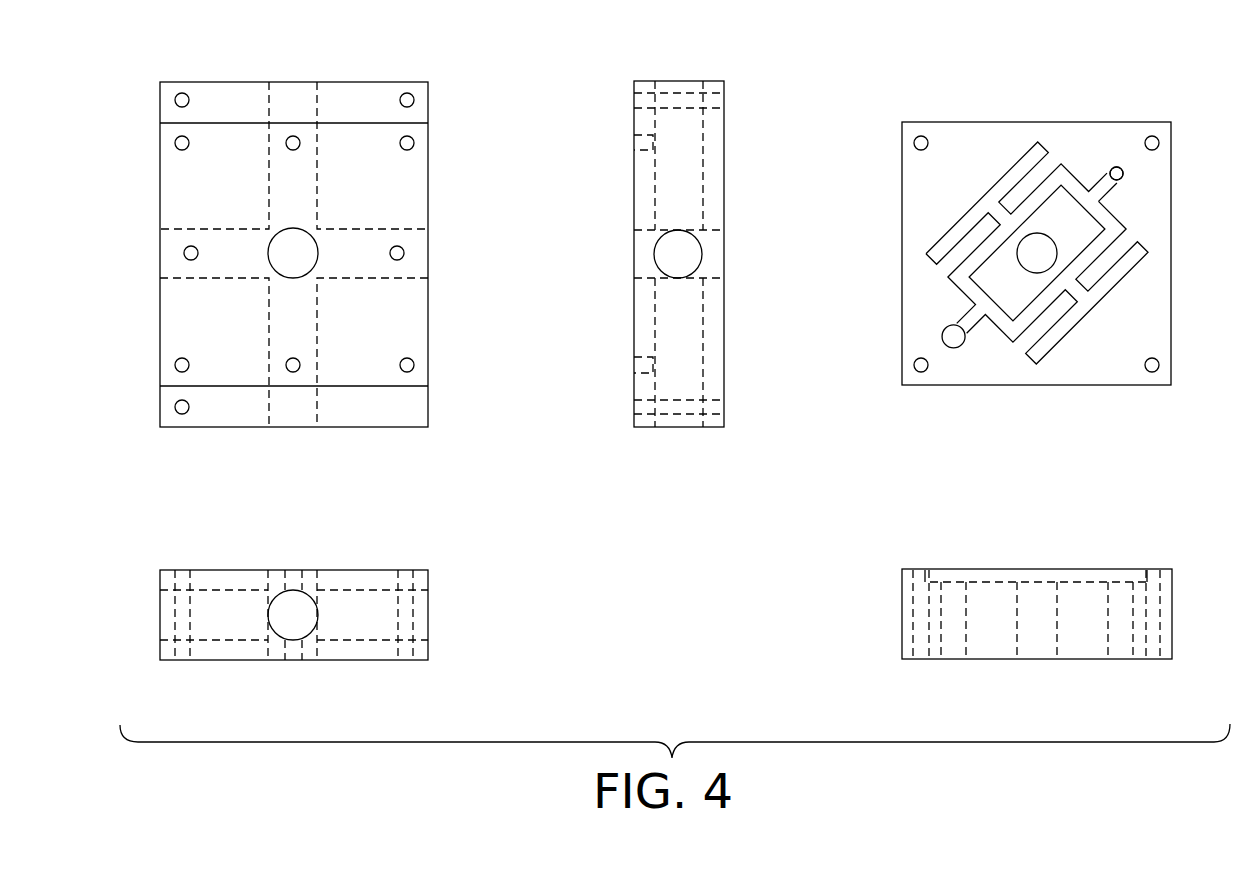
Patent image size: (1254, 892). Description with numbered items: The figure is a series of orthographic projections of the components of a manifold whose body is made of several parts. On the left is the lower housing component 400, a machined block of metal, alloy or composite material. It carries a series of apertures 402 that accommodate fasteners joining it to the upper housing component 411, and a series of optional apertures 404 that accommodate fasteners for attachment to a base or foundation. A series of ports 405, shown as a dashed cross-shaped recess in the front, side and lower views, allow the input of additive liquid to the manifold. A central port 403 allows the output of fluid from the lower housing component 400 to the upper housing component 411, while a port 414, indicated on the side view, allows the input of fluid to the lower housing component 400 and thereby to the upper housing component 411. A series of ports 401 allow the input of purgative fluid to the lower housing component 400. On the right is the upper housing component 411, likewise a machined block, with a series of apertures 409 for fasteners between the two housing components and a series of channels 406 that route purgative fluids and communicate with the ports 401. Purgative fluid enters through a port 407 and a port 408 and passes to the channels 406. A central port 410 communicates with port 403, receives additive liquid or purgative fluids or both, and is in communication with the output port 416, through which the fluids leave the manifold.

The lower housing component 400 is at (445, 83).
The ports 401 is at (399, 247).
The apertures 402 is at (411, 359).
The port 403 is at (301, 229).
The optional apertures 404 is at (178, 401).
The ports 405 is at (315, 95).
The channels 406 is at (967, 200).
The port 407 is at (1123, 171).
The port 408 is at (927, 370).
The apertures 409 is at (1147, 370).
The port 410 is at (1032, 259).
The upper housing component 411 is at (987, 107).
The port 414 is at (733, 263).
The output port 416 is at (1033, 662).